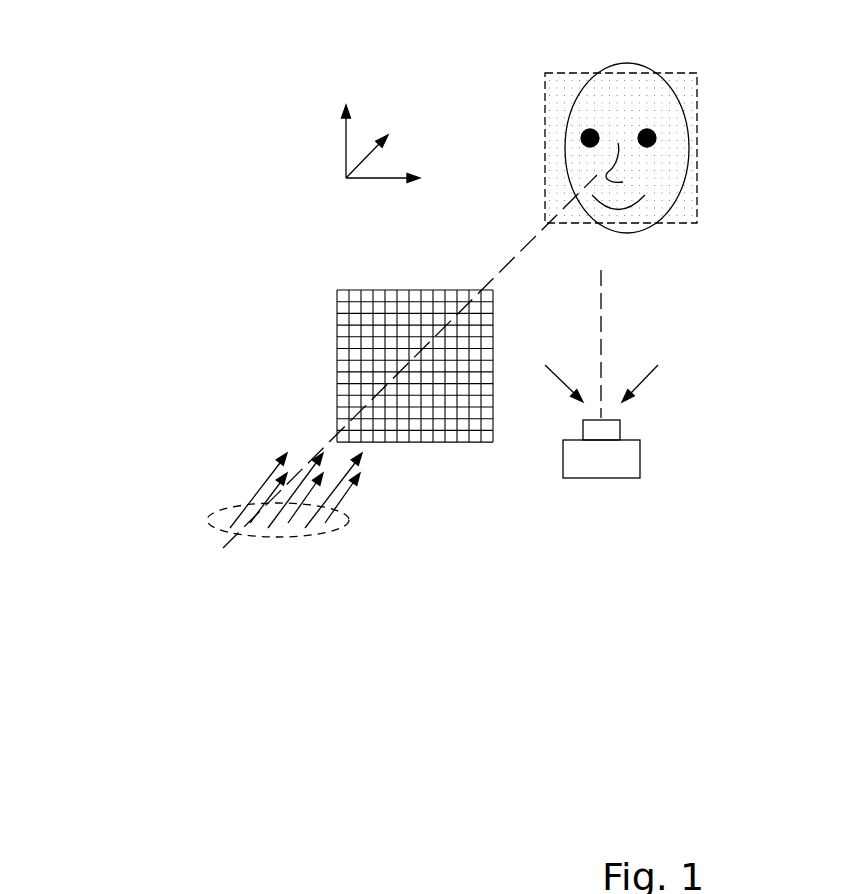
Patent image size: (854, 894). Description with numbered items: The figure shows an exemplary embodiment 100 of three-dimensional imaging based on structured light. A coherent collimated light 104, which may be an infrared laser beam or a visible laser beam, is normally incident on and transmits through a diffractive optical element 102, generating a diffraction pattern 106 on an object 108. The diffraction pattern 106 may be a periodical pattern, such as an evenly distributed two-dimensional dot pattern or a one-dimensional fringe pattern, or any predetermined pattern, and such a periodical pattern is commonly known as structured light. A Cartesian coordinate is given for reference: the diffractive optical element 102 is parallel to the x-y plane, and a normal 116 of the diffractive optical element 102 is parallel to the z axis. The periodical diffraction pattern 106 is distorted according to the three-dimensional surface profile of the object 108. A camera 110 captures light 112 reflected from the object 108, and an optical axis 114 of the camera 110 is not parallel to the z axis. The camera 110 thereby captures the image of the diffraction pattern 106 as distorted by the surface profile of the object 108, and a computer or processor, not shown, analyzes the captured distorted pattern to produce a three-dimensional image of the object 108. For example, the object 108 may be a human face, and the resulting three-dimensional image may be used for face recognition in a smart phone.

The exemplary embodiment of 3D imaging based on structured light 100 is at (116, 57).
The diffractive optical element 102 is at (377, 290).
The coherent collimated light 104 is at (248, 492).
The diffraction pattern 106 is at (563, 75).
The object 108 is at (630, 67).
The camera 110 is at (612, 478).
The light reflected from object 112 is at (647, 382).
The optical axis of camera 114 is at (602, 343).
The normal of DOE 116 is at (507, 265).